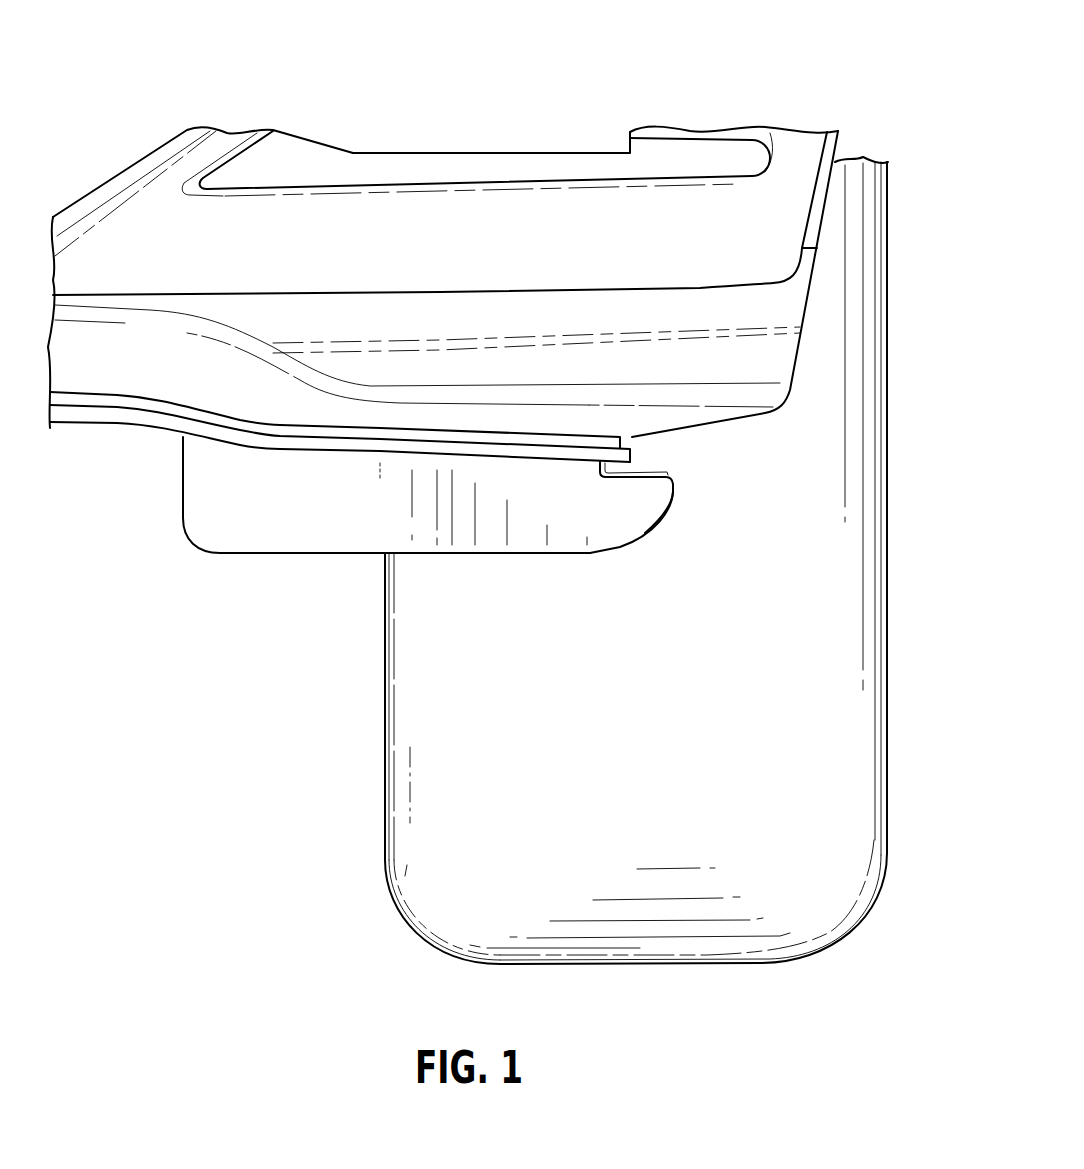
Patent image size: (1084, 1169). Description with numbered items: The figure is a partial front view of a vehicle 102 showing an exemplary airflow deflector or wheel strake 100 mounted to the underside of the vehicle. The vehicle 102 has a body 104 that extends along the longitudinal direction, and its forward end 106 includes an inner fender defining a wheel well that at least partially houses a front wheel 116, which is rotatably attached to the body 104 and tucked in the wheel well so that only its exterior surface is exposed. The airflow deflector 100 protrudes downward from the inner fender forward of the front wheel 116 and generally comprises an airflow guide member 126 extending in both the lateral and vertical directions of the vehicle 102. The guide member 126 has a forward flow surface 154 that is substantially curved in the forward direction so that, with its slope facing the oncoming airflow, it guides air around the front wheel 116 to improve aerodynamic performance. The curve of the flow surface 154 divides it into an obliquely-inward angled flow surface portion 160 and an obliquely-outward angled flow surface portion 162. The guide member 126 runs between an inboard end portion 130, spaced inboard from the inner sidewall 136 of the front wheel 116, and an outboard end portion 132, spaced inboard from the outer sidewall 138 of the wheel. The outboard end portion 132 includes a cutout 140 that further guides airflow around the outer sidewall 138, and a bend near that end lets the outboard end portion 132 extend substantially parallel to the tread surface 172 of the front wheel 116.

The airflow deflector 100 is at (232, 600).
The vehicle 102 is at (275, 92).
The body 104 is at (549, 126).
The forward end 106 is at (128, 387).
The front wheel 116 is at (427, 903).
The airflow guide member 126 is at (348, 540).
The inboard end portion 130 is at (202, 515).
The outboard end portion 132 is at (633, 512).
The inner sidewall 136 is at (385, 777).
The outer sidewall 138 is at (887, 693).
The cutout 140 is at (643, 475).
The forward flow surface 154 is at (410, 545).
The obliquely-inward angled flow surface portion 160 is at (278, 537).
The obliquely-outward angled flow surface portion 162 is at (602, 528).
The tread surface 172 is at (645, 955).